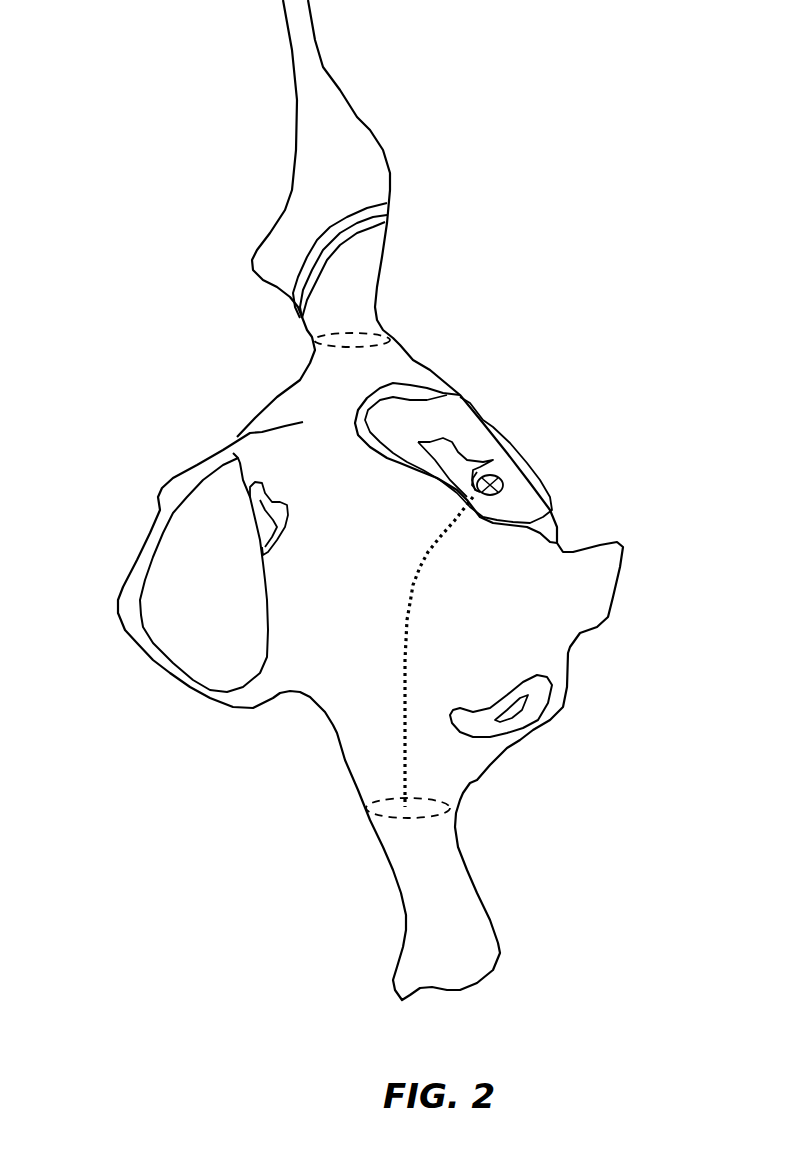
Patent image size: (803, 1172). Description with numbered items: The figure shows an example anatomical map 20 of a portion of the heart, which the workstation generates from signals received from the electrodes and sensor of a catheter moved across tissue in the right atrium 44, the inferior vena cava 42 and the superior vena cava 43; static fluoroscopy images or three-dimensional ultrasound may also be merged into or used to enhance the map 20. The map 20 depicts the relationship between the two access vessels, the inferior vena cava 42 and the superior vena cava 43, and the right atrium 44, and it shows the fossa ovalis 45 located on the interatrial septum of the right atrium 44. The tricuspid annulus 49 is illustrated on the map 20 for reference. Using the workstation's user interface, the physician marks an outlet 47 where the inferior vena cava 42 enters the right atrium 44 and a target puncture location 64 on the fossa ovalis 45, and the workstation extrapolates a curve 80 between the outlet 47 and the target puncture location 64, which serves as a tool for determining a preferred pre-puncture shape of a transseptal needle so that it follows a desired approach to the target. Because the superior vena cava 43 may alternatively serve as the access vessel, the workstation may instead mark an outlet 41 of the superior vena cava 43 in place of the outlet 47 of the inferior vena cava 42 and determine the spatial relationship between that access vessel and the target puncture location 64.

The anatomical map 20 is at (444, 53).
The outlet of the superior vena cava 41 is at (360, 328).
The inferior vena cava 42 is at (403, 903).
The superior vena cava 43 is at (283, 210).
The right atrium 44 is at (364, 523).
The fossa ovalis 45 is at (490, 442).
The outlet of the inferior vena cava 47 is at (427, 800).
The tricuspid annulus 49 is at (188, 683).
The target puncture location 64 is at (497, 480).
The curve 80 is at (413, 617).